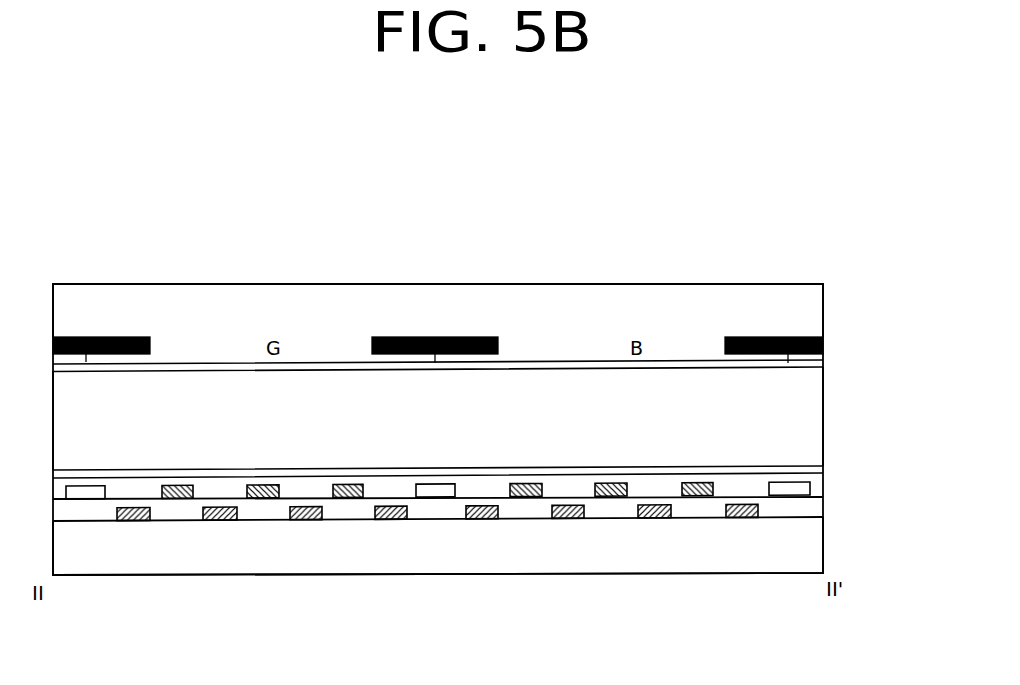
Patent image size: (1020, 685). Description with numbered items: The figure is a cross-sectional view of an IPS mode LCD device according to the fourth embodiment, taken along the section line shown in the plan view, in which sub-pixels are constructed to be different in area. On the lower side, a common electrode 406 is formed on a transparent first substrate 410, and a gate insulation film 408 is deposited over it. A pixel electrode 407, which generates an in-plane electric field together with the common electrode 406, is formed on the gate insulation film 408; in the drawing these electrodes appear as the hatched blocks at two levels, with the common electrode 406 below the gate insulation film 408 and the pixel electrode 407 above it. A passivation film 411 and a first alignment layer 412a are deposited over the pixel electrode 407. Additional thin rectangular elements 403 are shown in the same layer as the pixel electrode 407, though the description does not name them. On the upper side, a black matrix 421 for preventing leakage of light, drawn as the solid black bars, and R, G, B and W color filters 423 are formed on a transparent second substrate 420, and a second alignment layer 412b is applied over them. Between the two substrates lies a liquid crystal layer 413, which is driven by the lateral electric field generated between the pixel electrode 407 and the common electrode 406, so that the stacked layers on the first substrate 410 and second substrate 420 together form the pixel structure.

The second substrate 420 is at (816, 303).
The black matrix 421 is at (129, 338).
The color filters 423 is at (323, 347).
The second alignment layer 412b is at (815, 364).
The liquid crystal layer 413 is at (815, 416).
The first alignment layer 412a is at (813, 471).
The passivation film 411 is at (815, 487).
The gate insulation film 408 is at (815, 511).
The first substrate 410 is at (815, 545).
The pixel electrode 403 is at (797, 603).
The common electrode 406 is at (487, 603).
The pixel electrode 407 is at (532, 603).